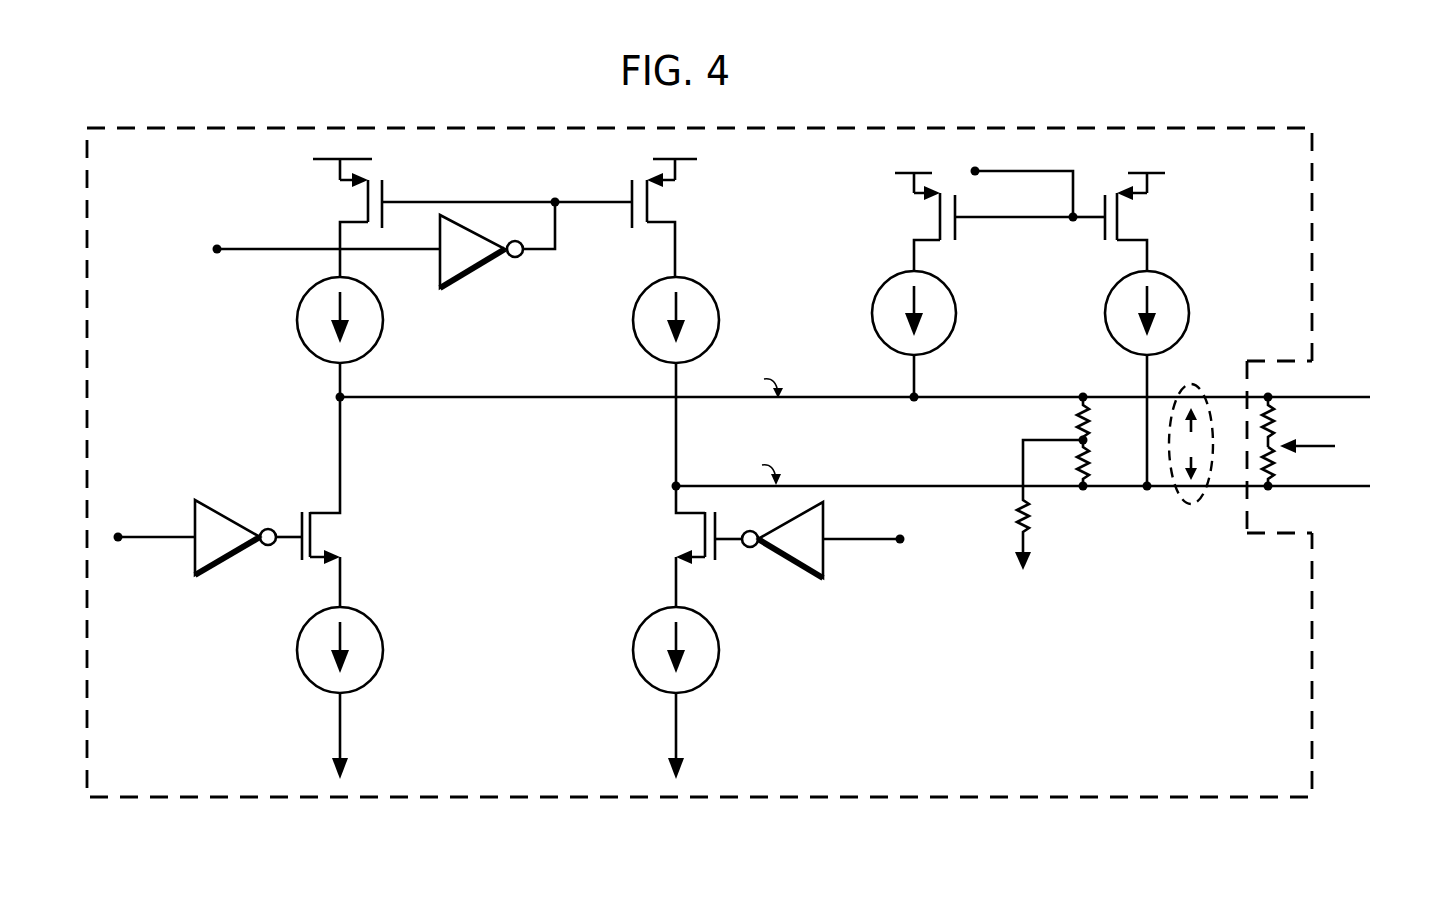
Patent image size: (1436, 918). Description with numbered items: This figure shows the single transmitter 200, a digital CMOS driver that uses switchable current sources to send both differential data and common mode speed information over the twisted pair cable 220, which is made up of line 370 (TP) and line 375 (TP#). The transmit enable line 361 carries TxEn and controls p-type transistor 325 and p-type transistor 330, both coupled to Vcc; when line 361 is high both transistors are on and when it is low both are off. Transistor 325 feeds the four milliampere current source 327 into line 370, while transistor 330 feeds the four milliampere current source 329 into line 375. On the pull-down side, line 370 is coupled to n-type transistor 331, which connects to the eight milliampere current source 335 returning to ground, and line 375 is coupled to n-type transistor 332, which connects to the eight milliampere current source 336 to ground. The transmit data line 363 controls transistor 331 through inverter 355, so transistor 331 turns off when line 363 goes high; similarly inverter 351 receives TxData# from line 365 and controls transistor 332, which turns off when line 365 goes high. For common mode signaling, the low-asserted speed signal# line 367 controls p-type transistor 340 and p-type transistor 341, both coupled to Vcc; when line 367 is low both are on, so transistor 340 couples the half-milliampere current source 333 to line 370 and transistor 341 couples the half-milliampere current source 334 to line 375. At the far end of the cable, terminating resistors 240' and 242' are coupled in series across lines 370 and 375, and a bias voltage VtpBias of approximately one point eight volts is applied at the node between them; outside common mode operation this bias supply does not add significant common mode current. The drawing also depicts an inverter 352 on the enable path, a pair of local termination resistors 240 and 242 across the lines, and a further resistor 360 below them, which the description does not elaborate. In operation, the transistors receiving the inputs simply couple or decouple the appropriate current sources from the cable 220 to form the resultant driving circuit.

The transmitter 200 is at (786, 799).
The p-type transistor 325 is at (336, 203).
The p-type transistor 330 is at (680, 203).
The p-type transistor 340 is at (917, 218).
The p-type transistor 341 is at (1141, 216).
The n-type transistor 331 is at (346, 534).
The n-type transistor 332 is at (670, 531).
The 4 mA current source 327 is at (382, 337).
The 4 mA current source 329 is at (632, 325).
The 0.5 mA current source 333 is at (945, 341).
The 0.5 mA current source 334 is at (1176, 285).
The 8 mA current source 335 is at (380, 661).
The 8 mA current source 336 is at (710, 678).
The inverter 352 is at (480, 273).
The inverter 355 is at (228, 566).
The inverter 351 is at (793, 566).
The transmit enable line 361 is at (252, 253).
The transmit data line 363 is at (152, 543).
The TxData# line 365 is at (872, 541).
The speed signal# line 367 is at (1016, 173).
The line TP 370 is at (756, 402).
The line TP# 375 is at (972, 484).
The termination resistor RT 240 is at (1094, 419).
The termination resistor RT 242 is at (1074, 465).
The resistor RX 360 is at (1030, 515).
The twisted pair cable 220 is at (1196, 501).
The terminating resistor 240' is at (1279, 447).
The terminating resistor 242' is at (1344, 480).